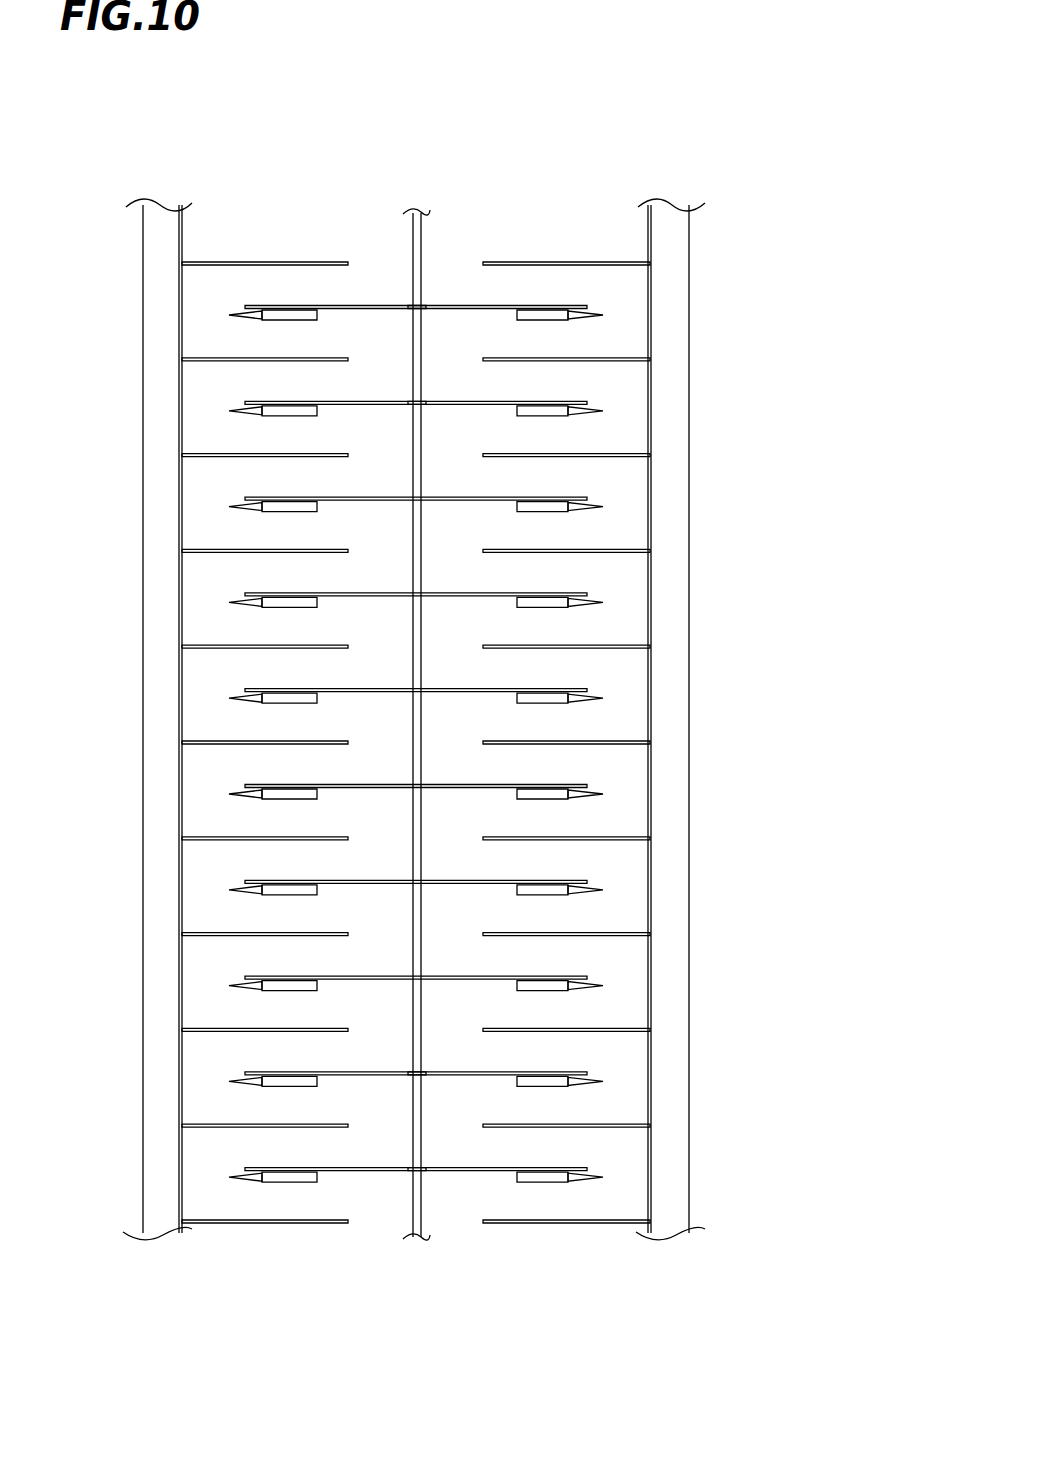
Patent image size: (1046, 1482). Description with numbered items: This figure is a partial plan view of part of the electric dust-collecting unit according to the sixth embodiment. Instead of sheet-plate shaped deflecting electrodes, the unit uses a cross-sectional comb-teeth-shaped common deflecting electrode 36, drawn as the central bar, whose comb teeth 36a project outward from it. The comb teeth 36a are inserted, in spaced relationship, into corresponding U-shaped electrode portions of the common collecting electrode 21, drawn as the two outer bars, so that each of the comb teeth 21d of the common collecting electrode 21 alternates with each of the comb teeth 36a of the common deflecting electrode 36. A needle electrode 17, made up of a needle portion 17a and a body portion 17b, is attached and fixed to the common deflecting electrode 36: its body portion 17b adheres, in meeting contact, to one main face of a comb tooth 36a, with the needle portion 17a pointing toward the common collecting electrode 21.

The needle electrode 17 is at (597, 420).
The needle portion 17a is at (578, 698).
The body portion 17b is at (535, 698).
The common collecting electrode 21 is at (178, 701).
The comb teeth 21d is at (610, 1124).
The common deflecting electrode 36 is at (412, 262).
The comb teeth 36a is at (465, 405).